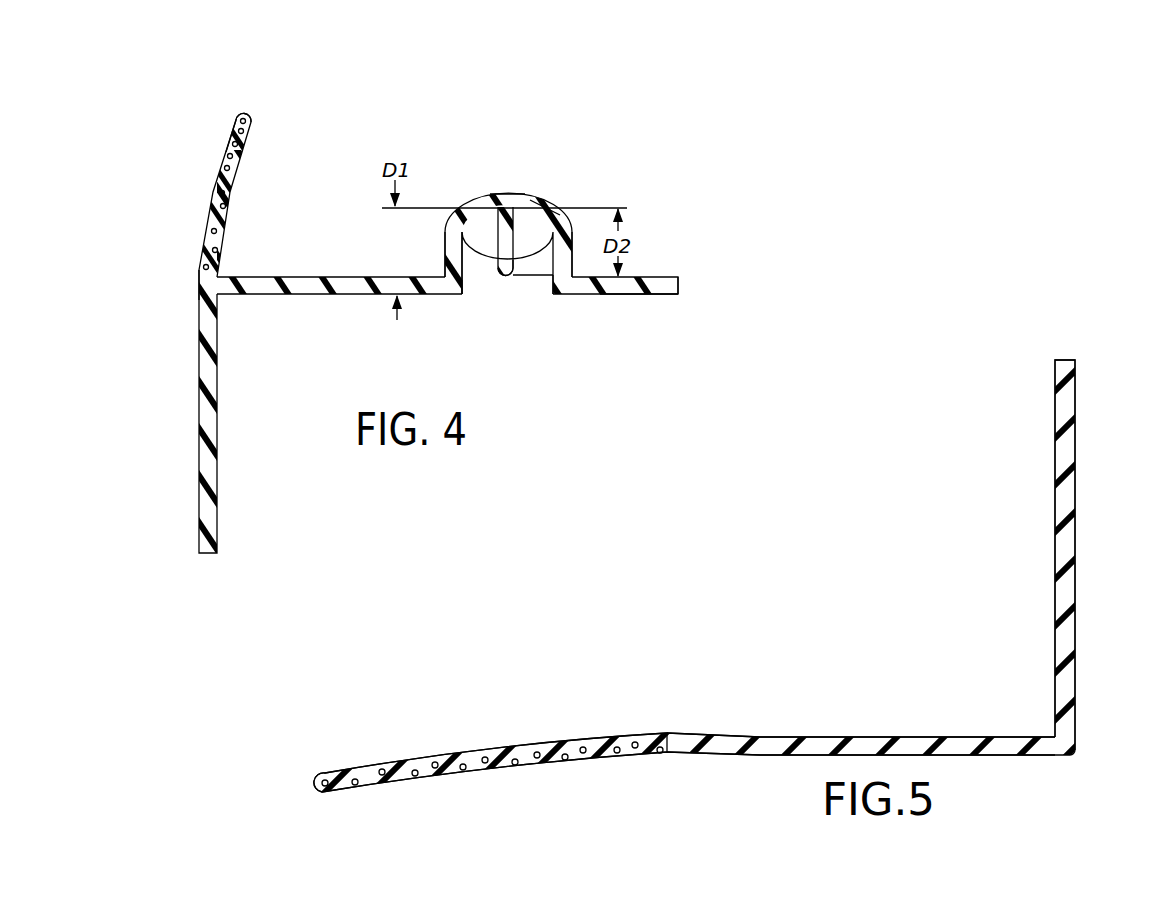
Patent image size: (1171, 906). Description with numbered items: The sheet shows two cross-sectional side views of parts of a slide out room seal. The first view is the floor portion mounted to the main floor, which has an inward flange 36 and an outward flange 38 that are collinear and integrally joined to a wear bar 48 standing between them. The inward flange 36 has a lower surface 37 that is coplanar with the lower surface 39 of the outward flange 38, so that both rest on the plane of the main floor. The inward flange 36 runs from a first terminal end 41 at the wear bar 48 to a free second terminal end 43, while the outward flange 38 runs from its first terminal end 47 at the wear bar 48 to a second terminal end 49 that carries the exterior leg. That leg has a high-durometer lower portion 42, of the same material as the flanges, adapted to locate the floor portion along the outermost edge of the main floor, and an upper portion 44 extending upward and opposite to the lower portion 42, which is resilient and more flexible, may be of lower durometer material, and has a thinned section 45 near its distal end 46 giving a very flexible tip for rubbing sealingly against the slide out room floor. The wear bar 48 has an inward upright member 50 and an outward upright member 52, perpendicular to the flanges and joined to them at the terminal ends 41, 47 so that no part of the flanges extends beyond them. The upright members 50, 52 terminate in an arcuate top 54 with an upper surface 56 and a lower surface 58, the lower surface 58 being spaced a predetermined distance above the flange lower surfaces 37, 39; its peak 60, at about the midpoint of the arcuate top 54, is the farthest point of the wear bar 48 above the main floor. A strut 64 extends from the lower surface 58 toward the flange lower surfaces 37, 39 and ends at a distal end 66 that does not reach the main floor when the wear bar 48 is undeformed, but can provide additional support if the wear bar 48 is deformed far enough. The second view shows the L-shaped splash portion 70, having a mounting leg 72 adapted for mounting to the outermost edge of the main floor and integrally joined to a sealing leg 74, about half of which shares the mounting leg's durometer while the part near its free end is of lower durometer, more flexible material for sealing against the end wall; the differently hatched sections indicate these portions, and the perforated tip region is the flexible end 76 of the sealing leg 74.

In FIG. 4, the inward flange 36 is at (652, 262).
In FIG. 4, the lower surface 37 is at (644, 297).
In FIG. 4, the outward flange 38 is at (352, 252).
In FIG. 4, the lower surface 39 is at (303, 296).
In FIG. 4, the first terminal end 41 is at (548, 292).
In FIG. 4, the lower portion 42 is at (178, 363).
In FIG. 4, the second terminal end 43 is at (679, 287).
In FIG. 4, the upper portion 44 is at (194, 178).
In FIG. 4, the thinned section 45 is at (226, 140).
In FIG. 4, the distal end 46 is at (246, 113).
In FIG. 4, the first terminal end 47 is at (465, 282).
In FIG. 4, the wear bar 48 is at (503, 148).
In FIG. 4, the second terminal end 49 is at (198, 284).
In FIG. 4, the inward upright member 50 is at (577, 250).
In FIG. 4, the outward upright member 52 is at (445, 237).
In FIG. 4, the arcuate top 54 is at (548, 198).
In FIG. 4, the upper surface 56 is at (497, 207).
In FIG. 4, the lower surface 58 is at (483, 223).
In FIG. 4, the peak 60 is at (510, 195).
In FIG. 4, the strut 64 is at (516, 260).
In FIG. 4, the distal end 66 is at (507, 272).
In FIG. 5, the splash portion 70 is at (866, 553).
In FIG. 5, the mounting leg 72 is at (1084, 524).
In FIG. 5, the sealing leg 74 is at (775, 730).
In FIG. 5, the perforated strip 76 is at (304, 783).